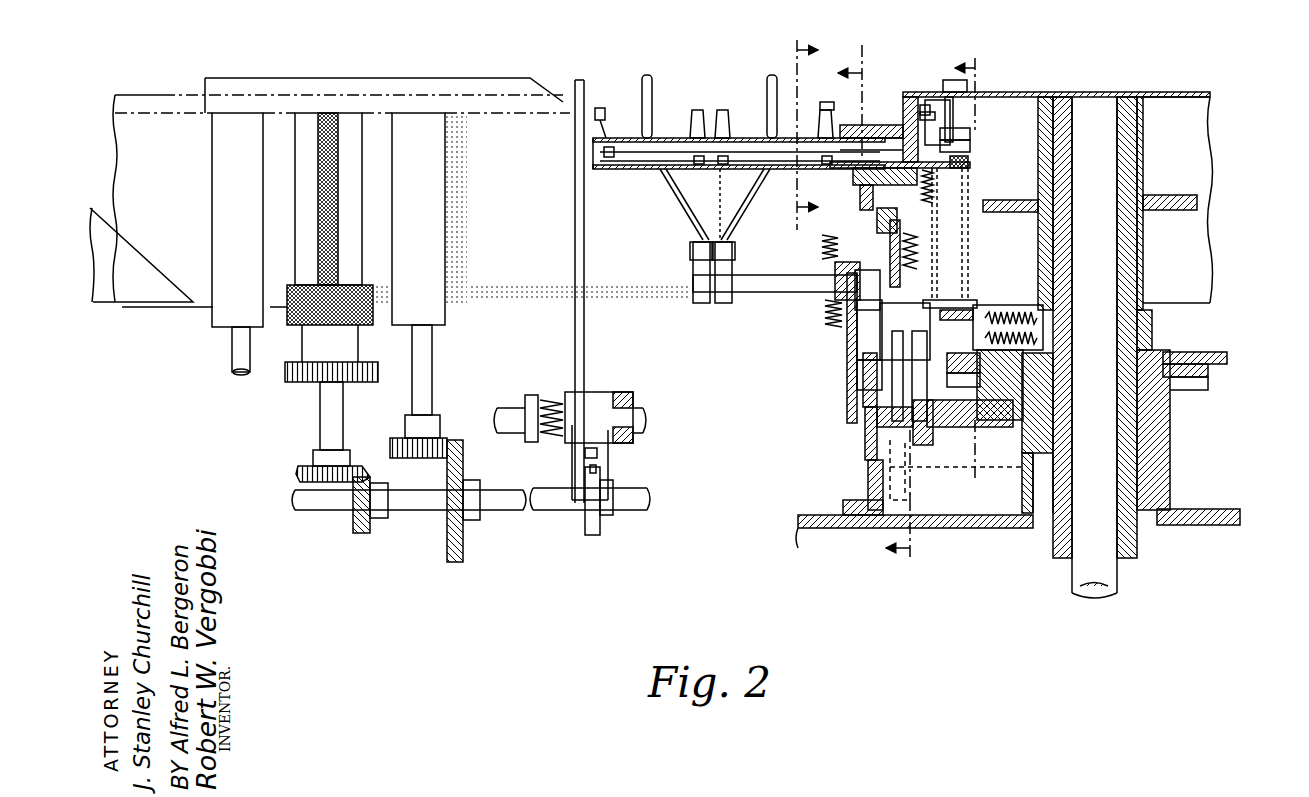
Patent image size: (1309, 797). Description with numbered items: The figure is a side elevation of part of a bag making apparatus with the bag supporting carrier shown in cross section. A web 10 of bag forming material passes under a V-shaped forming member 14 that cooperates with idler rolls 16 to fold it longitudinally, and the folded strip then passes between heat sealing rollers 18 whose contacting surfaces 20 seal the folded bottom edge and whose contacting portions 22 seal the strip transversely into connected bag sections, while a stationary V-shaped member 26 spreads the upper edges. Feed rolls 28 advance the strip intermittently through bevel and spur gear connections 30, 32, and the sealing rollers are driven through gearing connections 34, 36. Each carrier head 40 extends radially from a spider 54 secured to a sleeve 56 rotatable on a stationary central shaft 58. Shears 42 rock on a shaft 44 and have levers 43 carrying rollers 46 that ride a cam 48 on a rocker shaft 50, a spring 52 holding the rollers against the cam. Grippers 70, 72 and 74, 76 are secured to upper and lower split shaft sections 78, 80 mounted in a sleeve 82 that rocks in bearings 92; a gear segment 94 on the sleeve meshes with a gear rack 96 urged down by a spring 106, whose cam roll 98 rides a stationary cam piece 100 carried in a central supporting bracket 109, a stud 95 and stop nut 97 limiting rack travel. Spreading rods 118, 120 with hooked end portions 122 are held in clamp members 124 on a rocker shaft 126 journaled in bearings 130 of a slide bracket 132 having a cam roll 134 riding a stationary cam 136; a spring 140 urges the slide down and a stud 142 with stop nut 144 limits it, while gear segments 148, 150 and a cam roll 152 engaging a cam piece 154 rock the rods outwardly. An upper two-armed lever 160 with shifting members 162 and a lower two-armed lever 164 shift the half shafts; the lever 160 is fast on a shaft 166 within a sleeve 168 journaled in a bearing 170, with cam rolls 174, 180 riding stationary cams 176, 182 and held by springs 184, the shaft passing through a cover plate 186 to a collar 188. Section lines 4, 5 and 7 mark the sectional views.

The web 10 is at (163, 95).
The V-shaped forming member 14 is at (115, 227).
The idler rolls 16 is at (212, 147).
The heat sealing rollers 18 is at (296, 122).
The contacting surfaces 20 is at (287, 297).
The contacting portions 22 is at (340, 113).
The stationary V-shaped member 26 is at (374, 78).
The feed rolls 28 is at (448, 188).
The bevel gear connection 30 is at (468, 455).
The spur gear connection 32 is at (440, 340).
The gearing connection 34 is at (352, 468).
The gearing connection 36 is at (285, 382).
The carrier head 40 is at (650, 37).
The shears 42 is at (575, 80).
The levers 43 is at (600, 460).
The shaft 44 is at (633, 408).
The rollers 46 is at (585, 510).
The cam 48 is at (606, 515).
The rocker shaft 50 is at (630, 510).
The spring 52 is at (600, 470).
The spider 54 is at (1038, 140).
The sleeve 56 is at (1135, 142).
The central shaft 58 is at (1093, 97).
The grippers 70 is at (602, 108).
The grippers 72 is at (723, 110).
The grippers 74 is at (696, 110).
The grippers 76 is at (826, 110).
The upper split shaft section 78 is at (640, 148).
The lower split shaft section 80 is at (630, 169).
The sleeve 82 is at (660, 169).
The bearings 92 is at (903, 118).
The gear segment 94 is at (940, 116).
The stud 95 is at (935, 100).
The gear rack 96 is at (935, 195).
The stop nut 97 is at (922, 105).
The cam roll 98 is at (892, 320).
The stationary cam piece 100 is at (950, 427).
The spring 106 is at (920, 240).
The central supporting bracket 109 is at (868, 487).
The bag spreading rods 118 is at (680, 210).
The bag spreading rods 120 is at (732, 215).
The hooked end portions 122 is at (660, 52).
The clamp members 124 is at (702, 303).
The rocker shaft 126 is at (760, 292).
The bearings 130 is at (825, 310).
The slide bracket 132 is at (863, 380).
The cam roll 134 is at (865, 420).
The stationary cam 136 is at (868, 445).
The spring 140 is at (847, 320).
The stud 142 is at (740, 185).
The stop nut 144 is at (843, 98).
The gear segment 148 is at (822, 250).
The gear segment 150 is at (857, 340).
The cam roll 152 is at (857, 365).
The stationary cam piece 154 is at (877, 420).
The upper two-armed lever 160 is at (970, 133).
The shifting members 162 is at (970, 145).
The lower two-armed lever 164 is at (970, 164).
The shaft 166 is at (965, 100).
The sleeve 168 is at (945, 260).
The bearing 170 is at (970, 280).
The cam roll 174 is at (963, 399).
The stationary cam 176 is at (1208, 377).
The cam roll 180 is at (985, 395).
The second stationary cam 182 is at (1183, 352).
The springs 184 is at (1036, 338).
The cover plate 186 is at (1050, 92).
The collar 188 is at (940, 80).
The section line 4- 4 is at (968, 260).
The section line 5- 5 is at (876, 311).
The section line 7- 7 is at (802, 130).